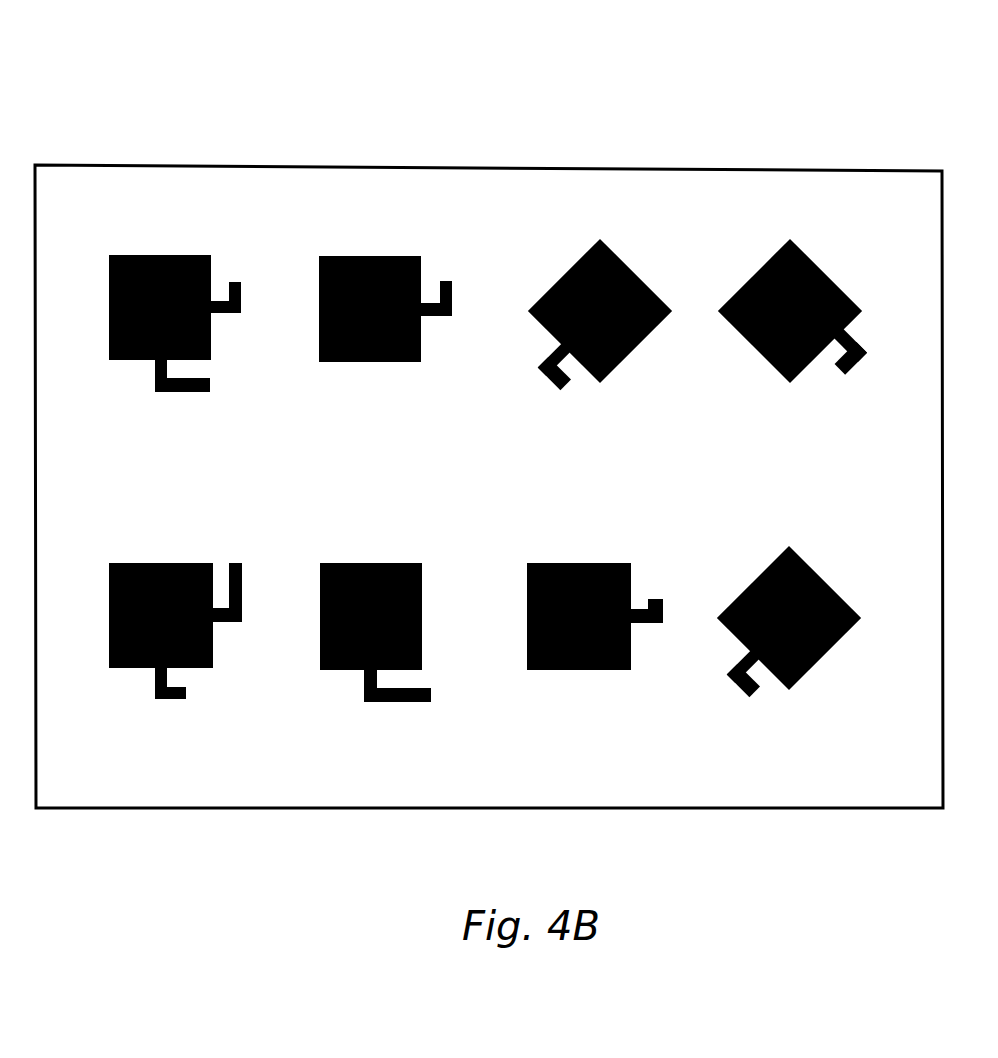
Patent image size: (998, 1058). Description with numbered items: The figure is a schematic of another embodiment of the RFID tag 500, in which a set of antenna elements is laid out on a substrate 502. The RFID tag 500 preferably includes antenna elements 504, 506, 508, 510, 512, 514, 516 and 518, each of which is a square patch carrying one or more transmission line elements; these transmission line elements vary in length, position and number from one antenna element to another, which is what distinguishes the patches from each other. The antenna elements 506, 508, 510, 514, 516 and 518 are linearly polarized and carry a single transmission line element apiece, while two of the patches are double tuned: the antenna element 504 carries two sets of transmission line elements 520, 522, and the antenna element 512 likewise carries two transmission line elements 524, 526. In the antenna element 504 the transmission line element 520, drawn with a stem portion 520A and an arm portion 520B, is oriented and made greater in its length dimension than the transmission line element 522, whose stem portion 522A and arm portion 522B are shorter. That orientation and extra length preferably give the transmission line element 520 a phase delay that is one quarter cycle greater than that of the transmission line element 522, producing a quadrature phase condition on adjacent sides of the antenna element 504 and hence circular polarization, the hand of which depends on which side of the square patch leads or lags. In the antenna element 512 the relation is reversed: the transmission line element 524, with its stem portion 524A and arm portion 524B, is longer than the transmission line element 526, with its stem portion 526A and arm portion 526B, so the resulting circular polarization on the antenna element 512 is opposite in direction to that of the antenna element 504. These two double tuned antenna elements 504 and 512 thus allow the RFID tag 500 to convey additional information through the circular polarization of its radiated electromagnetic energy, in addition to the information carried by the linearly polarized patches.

The RFID tag 500 is at (980, 87).
The substrate 502 is at (918, 789).
The antenna element 504 is at (150, 255).
The antenna element 506 is at (373, 256).
The antenna element 508 is at (632, 271).
The antenna element 510 is at (828, 277).
The antenna element 512 is at (115, 668).
The antenna element 514 is at (335, 671).
The antenna element 516 is at (575, 671).
The antenna element 518 is at (813, 668).
The transmission line element 520 is at (147, 419).
The first feed tab stem portion 520A is at (154, 370).
The first feed tab arm portion 520B is at (170, 393).
The transmission line element 522 is at (259, 285).
The second feed tab stem portion 522A is at (222, 314).
The second feed tab arm portion 522B is at (236, 281).
The transmission line element 524 is at (197, 724).
The third feed tab stem portion 524A is at (153, 680).
The third feed tab arm portion 524B is at (188, 697).
The transmission line element 526 is at (263, 607).
The fourth feed tab stem portion 526A is at (227, 607).
The fourth feed tab arm portion 526B is at (243, 605).